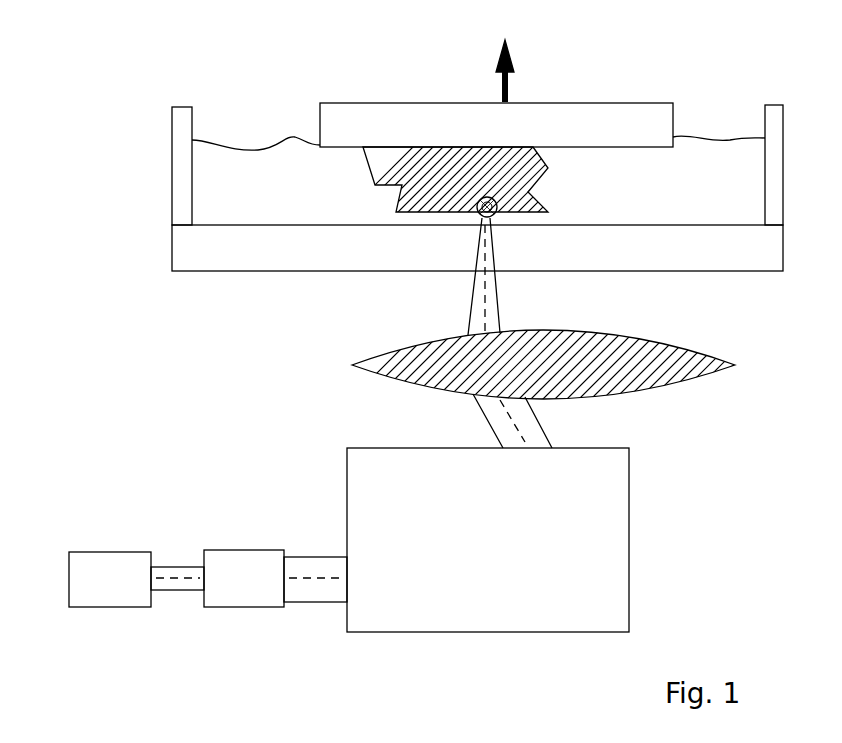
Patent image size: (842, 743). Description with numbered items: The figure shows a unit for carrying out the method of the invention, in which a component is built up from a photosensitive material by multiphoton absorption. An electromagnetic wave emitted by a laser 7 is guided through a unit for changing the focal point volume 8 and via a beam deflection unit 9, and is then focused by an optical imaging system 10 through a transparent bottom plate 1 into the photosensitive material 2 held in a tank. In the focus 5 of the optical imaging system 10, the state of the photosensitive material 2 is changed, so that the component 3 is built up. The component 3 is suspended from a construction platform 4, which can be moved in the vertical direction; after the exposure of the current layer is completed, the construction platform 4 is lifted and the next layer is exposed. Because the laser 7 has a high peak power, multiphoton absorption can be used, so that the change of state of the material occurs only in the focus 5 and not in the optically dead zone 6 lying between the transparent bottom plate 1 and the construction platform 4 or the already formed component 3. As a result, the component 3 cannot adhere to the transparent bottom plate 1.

The transparent bottom plate 1 is at (202, 255).
The photosensitive material 2 is at (218, 188).
The component 3 is at (410, 165).
The construction platform 4 is at (438, 122).
The focus 5 is at (477, 218).
The optically dead zone 6 is at (505, 224).
The laser 7 is at (110, 579).
The unit for changing the focal point volume 8 is at (217, 578).
The beam deflection unit 9 is at (456, 540).
The optical imaging system 10 is at (650, 392).